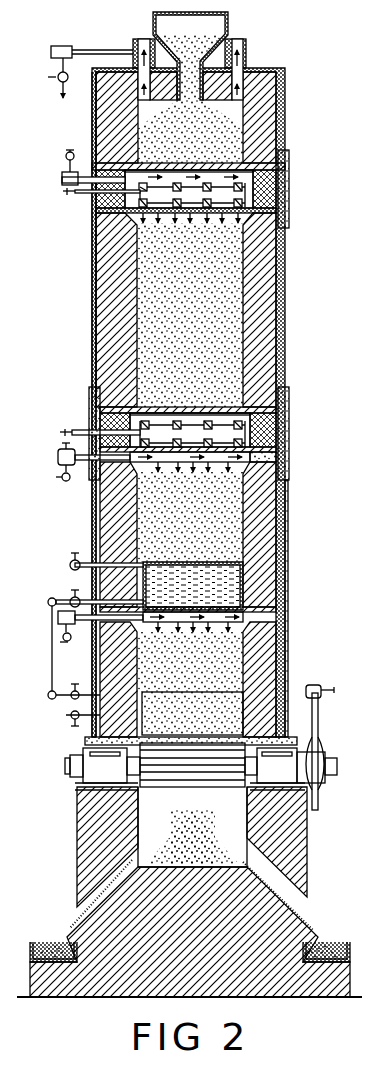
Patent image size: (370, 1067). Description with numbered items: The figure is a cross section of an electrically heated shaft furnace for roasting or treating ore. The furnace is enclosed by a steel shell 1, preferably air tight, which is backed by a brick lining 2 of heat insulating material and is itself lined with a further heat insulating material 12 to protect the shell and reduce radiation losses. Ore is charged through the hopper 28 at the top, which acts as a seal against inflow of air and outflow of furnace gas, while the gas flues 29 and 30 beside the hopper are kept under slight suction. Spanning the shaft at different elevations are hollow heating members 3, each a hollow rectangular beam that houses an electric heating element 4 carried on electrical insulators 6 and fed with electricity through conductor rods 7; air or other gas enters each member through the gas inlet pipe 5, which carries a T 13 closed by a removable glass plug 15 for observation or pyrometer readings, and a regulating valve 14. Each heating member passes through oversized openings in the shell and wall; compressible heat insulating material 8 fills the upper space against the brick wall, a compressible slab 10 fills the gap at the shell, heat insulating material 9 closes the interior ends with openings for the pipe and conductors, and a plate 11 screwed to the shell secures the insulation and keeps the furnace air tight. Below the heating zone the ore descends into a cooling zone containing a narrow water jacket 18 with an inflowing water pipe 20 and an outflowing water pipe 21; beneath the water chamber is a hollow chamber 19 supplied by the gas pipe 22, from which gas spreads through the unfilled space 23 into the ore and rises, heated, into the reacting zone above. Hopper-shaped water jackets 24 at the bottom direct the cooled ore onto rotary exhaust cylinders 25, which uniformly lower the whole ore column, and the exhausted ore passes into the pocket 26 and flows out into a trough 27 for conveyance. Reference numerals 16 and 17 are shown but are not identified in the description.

The steel shell 1 is at (286, 310).
The brick lining 2 is at (265, 326).
The hollow heating member 3 is at (150, 165).
The electric heating element 4 is at (236, 195).
The gas inlet pipe 5 is at (90, 184).
The electrical insulators 6 is at (246, 182).
The conductor rods 7 is at (72, 193).
The compressible heat insulating material 8 is at (150, 170).
The heat insulating material 9 is at (96, 209).
The compressible heat insulating slab 10 is at (100, 421).
The plate 11 is at (92, 227).
The heat insulating material 12 is at (288, 518).
The T 13 is at (62, 176).
The regulating valve 14 is at (64, 154).
The glass plug 15 is at (60, 180).
The outer casing 16 is at (97, 250).
The outlet passage 17 is at (250, 462).
The water jacket 18 is at (236, 587).
The hollow chamber 19 is at (244, 617).
The inflowing water pipe 20 is at (97, 594).
The outflowing water pipe 21 is at (96, 558).
The gas pipe 22 is at (74, 662).
The unfilled space 23 is at (233, 628).
The water jackets 24 is at (236, 712).
The rotary exhaust cylinders 25 is at (182, 790).
The pocket 26 is at (148, 838).
The trough 27 is at (190, 940).
The hopper 28 is at (229, 26).
The gas flue 29 is at (246, 83).
The gas flue 30 is at (247, 53).